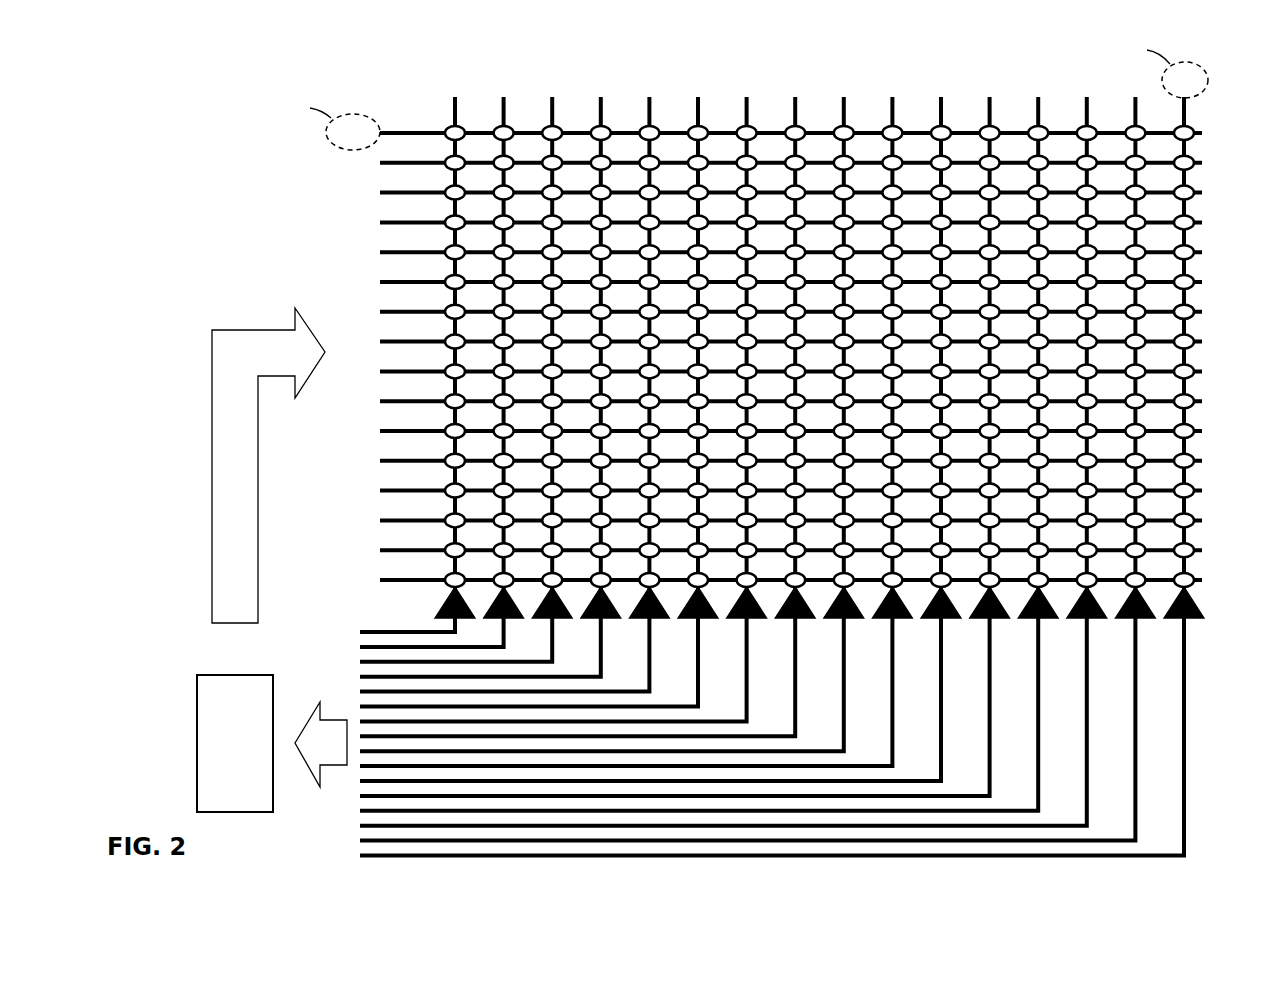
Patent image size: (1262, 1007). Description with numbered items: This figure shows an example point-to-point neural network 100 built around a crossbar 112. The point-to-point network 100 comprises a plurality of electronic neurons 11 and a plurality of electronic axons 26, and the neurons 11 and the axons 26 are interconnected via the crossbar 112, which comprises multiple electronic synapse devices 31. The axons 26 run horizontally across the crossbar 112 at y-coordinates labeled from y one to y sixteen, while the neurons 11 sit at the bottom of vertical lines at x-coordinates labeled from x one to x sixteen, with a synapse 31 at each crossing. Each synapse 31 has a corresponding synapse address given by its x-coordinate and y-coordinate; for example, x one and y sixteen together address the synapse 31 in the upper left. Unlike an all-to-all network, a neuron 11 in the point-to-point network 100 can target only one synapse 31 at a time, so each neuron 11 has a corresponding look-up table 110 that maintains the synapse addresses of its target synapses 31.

The point-to-point neural network 100 is at (766, 53).
The crossbar 112 is at (424, 104).
The look-up table 110 is at (237, 675).
The electronic axon 26 is at (400, 592).
The electronic synapse device 31 is at (1191, 306).
The electronic neuron 11 is at (1197, 605).